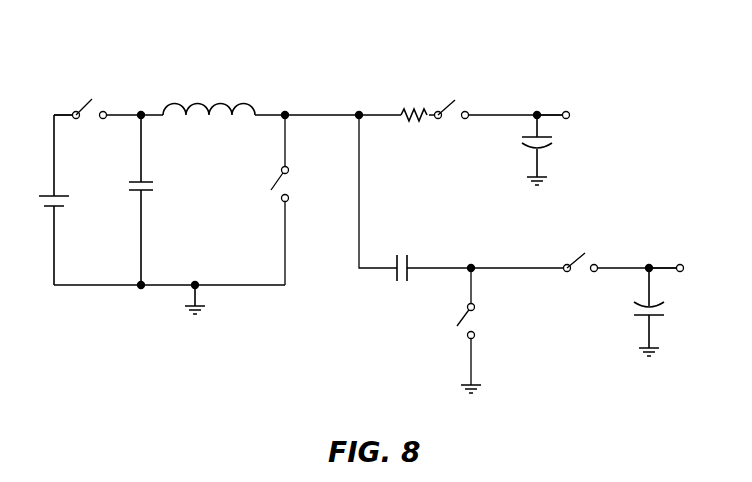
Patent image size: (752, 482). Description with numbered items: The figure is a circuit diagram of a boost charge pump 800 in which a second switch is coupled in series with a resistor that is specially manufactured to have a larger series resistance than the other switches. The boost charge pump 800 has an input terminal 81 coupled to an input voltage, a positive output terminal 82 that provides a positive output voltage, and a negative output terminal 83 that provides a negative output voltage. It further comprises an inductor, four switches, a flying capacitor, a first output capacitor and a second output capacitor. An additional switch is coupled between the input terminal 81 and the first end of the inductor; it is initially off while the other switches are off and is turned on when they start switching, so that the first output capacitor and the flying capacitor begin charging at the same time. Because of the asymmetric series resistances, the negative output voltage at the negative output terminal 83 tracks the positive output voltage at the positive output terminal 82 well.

The boost charge pump 800 is at (623, 74).
The input terminal 81 is at (47, 113).
The positive output terminal 82 is at (561, 120).
The negative output terminal 83 is at (684, 266).